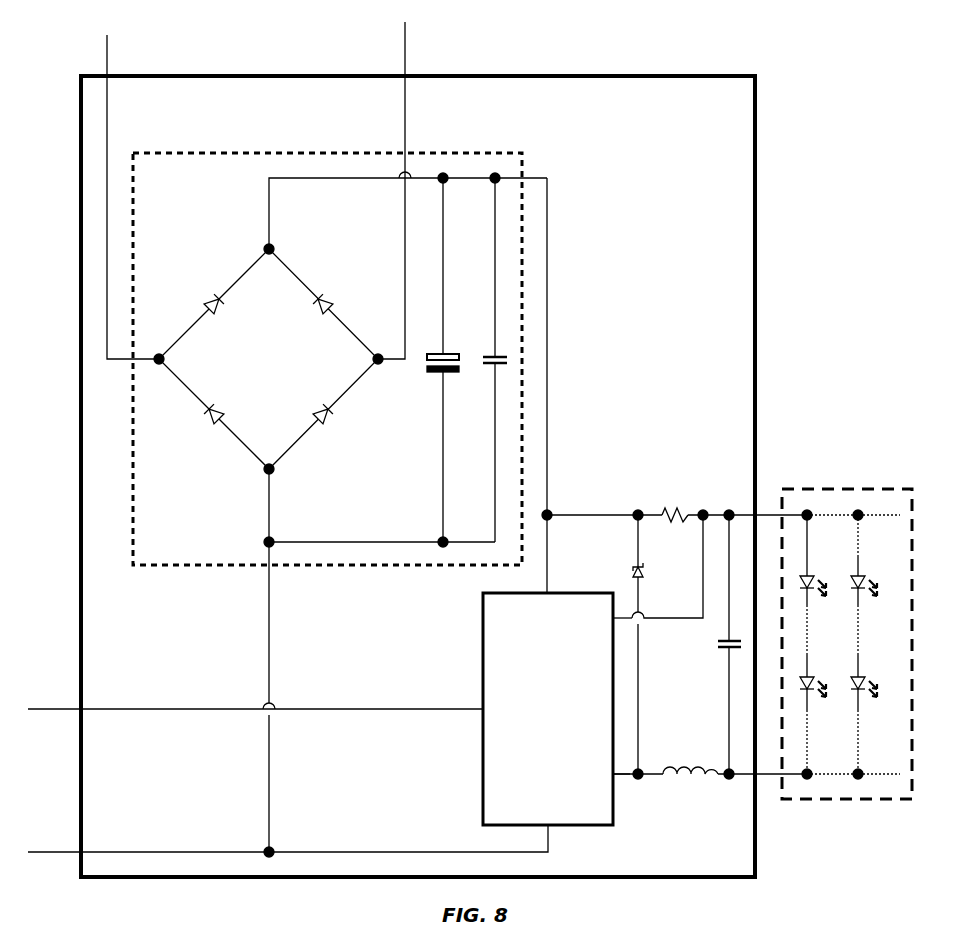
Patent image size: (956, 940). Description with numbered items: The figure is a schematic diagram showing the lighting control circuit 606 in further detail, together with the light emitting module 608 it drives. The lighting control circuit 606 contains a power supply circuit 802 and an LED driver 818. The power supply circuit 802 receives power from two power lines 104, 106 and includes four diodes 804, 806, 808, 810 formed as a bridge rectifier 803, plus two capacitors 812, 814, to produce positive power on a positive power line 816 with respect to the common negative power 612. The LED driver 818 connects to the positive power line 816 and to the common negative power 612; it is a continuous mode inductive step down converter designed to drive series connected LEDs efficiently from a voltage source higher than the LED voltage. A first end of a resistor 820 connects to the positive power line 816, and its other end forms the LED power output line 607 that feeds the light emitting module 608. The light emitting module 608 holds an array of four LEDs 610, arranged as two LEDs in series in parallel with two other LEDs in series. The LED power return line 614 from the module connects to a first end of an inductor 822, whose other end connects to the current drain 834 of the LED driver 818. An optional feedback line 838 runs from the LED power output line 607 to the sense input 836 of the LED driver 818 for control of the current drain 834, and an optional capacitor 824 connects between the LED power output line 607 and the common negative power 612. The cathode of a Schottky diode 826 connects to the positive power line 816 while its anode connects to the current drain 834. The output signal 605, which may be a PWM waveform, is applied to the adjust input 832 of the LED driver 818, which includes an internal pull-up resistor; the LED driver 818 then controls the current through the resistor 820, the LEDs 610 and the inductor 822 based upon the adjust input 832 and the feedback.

The power line 104 is at (107, 57).
The power line 106 is at (405, 53).
The output signal 605 is at (52, 709).
The lighting control circuit 606 is at (418, 476).
The LED power output line 607 is at (768, 515).
The light emitting module 608 is at (863, 488).
The LEDs 610 is at (807, 575).
The common negative power 612 is at (57, 852).
The LED power return line 614 is at (772, 774).
The power supply circuit 802 is at (327, 359).
The bridge rectifier 803 is at (200, 447).
The diode 804 is at (210, 300).
The diode 806 is at (330, 300).
The diode 808 is at (220, 408).
The diode 810 is at (318, 408).
The capacitor 812 is at (426, 370).
The capacitor 814 is at (485, 357).
The positive power line 816 is at (547, 350).
The LED driver 818 is at (548, 709).
The resistor 820 is at (672, 506).
The inductor 822 is at (690, 780).
The capacitor 824 is at (718, 646).
The Schottky diode 826 is at (632, 568).
The adjust input 832 is at (490, 716).
The current drain 834 is at (606, 775).
The sense input 836 is at (598, 626).
The feedback line 838 is at (672, 617).